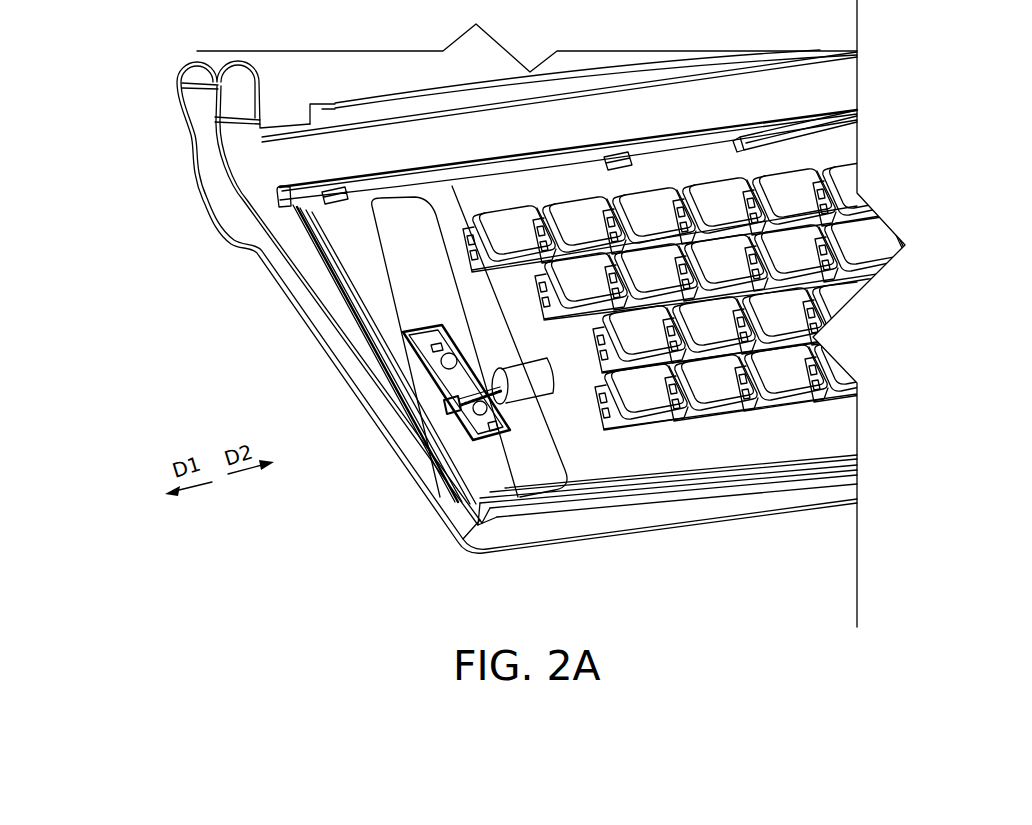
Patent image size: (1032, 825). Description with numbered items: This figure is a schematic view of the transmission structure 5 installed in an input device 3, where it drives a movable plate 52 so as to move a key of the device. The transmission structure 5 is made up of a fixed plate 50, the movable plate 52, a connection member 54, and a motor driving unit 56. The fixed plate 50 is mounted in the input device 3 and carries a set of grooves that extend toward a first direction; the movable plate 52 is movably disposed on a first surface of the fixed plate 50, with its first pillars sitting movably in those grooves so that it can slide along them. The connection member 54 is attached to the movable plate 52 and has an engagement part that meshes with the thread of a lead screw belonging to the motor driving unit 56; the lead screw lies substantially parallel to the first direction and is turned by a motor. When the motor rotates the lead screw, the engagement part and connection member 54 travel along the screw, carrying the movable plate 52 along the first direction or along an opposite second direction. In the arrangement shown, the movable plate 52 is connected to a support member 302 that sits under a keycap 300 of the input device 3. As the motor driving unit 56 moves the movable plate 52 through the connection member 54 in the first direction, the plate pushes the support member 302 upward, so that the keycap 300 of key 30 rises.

The input device 3 is at (482, 307).
The transmission structure 5 is at (410, 300).
The key 30 is at (685, 362).
The keycap 300 is at (722, 385).
The support member 302 is at (733, 413).
The fixed plate 50 is at (353, 265).
The movable plate 52 is at (450, 391).
The connection member 54 is at (470, 418).
The motor driving unit 56 is at (535, 378).